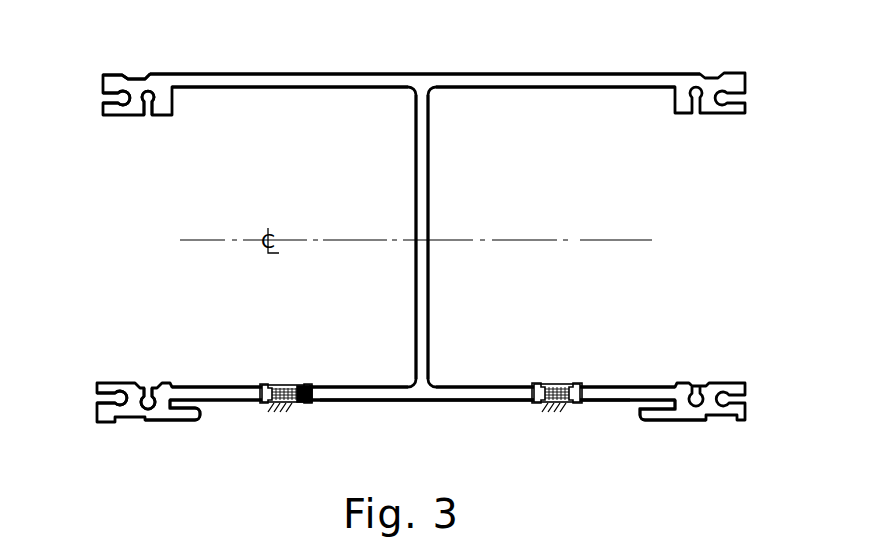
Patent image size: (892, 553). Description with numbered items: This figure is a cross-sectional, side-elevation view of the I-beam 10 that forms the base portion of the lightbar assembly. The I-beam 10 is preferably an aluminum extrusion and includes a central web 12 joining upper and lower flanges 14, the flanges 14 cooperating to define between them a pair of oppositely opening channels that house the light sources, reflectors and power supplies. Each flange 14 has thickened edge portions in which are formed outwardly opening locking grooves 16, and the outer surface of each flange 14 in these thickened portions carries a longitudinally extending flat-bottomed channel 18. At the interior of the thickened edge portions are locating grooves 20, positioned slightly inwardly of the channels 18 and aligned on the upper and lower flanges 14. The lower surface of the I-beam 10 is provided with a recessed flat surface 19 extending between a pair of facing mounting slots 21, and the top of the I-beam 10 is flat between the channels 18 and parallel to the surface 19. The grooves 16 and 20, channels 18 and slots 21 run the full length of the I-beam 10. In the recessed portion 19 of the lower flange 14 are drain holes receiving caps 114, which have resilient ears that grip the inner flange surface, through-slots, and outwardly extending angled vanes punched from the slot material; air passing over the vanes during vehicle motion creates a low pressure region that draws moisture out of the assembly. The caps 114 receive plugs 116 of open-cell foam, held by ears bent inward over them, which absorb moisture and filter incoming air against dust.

The I-beam 10 is at (555, 56).
The web 12 is at (428, 188).
The flanges 14 is at (290, 74).
The locking grooves 16 is at (116, 100).
The flat-bottomed channels 18 is at (137, 75).
The recessed flat surface 19 is at (472, 401).
The locating grooves 20 is at (151, 113).
The mounting slots 21 is at (202, 408).
The caps 114 is at (308, 403).
The plugs 116 is at (300, 385).